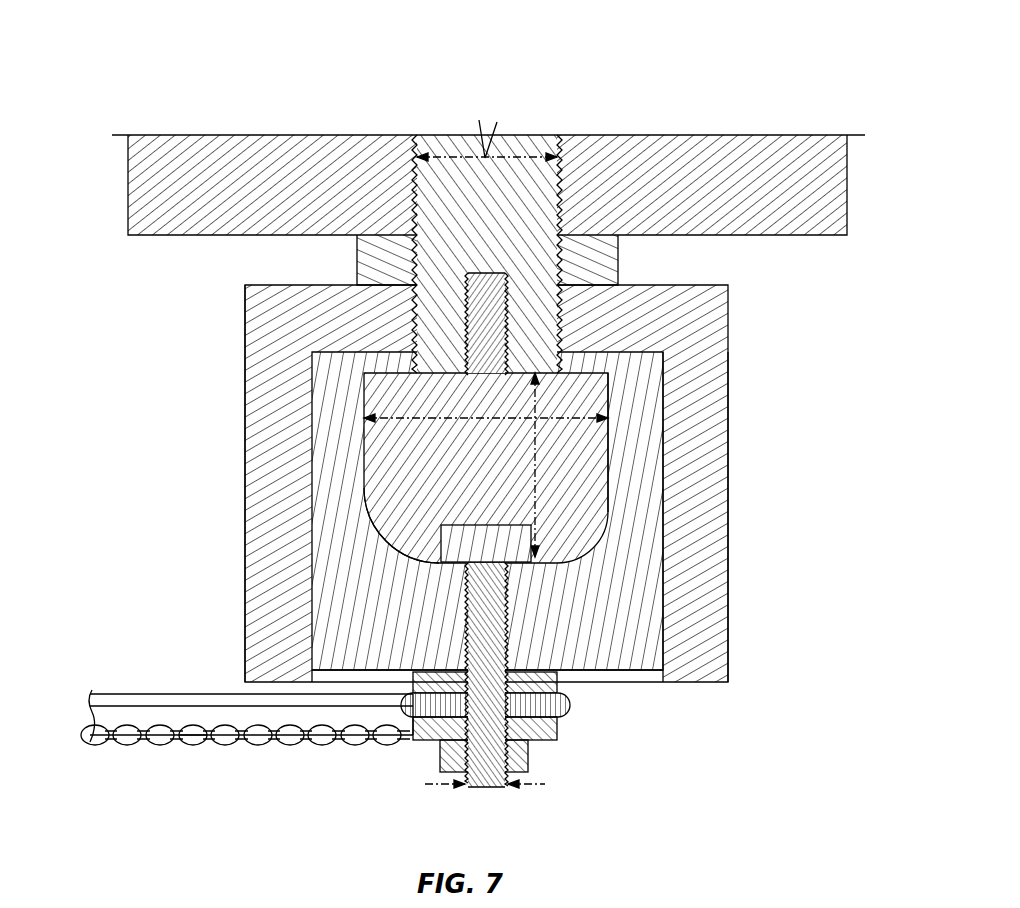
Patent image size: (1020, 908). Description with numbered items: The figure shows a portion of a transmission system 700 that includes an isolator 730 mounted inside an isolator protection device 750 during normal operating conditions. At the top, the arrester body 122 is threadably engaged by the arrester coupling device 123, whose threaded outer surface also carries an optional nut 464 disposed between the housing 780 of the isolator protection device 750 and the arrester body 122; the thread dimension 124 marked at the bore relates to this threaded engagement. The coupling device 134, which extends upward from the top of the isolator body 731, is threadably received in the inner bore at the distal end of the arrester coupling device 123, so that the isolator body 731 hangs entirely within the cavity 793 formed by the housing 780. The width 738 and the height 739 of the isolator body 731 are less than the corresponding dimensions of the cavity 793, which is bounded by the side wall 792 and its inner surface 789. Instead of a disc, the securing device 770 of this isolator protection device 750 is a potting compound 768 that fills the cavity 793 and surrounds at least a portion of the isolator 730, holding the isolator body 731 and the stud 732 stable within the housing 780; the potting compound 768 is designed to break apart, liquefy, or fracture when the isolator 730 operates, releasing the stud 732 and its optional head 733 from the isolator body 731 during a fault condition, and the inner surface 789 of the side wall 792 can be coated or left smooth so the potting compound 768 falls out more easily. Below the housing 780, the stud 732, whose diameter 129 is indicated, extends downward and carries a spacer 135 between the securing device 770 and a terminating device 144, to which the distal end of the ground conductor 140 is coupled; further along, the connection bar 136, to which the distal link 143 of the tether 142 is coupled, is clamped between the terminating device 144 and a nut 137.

The transmission system 700 is at (778, 63).
The arrester body 122 is at (684, 199).
The arrester coupling device 123 is at (451, 183).
The threads 124 is at (511, 160).
The coupling device 134 is at (491, 274).
The nut 464 is at (621, 278).
The isolator protection device 750 is at (241, 491).
The housing 780 is at (244, 541).
The cavity 793 is at (315, 432).
The width 738 is at (452, 421).
The isolator body 731 is at (468, 479).
The head 733 is at (468, 558).
The isolator 730 is at (378, 531).
The potting compound 768 is at (642, 412).
The inner surface 789 is at (642, 478).
The height 739 is at (536, 497).
The side wall 792 is at (675, 637).
The securing device 770 is at (641, 673).
The ground conductor 140 is at (189, 696).
The tether 142 is at (192, 746).
The distal link 143 is at (261, 753).
The spacer 135 is at (566, 683).
The terminating device 144 is at (574, 712).
The connection bar 136 is at (560, 736).
The nut 137 is at (530, 759).
The stud 732 is at (487, 791).
The bolt diameter 129 is at (538, 786).